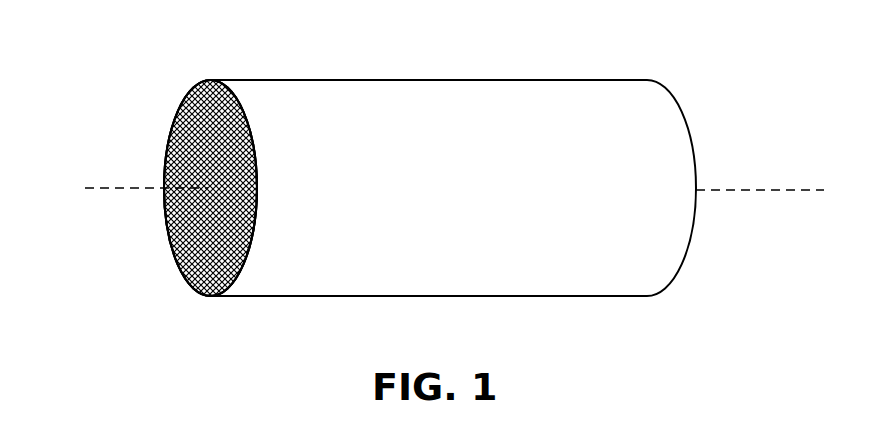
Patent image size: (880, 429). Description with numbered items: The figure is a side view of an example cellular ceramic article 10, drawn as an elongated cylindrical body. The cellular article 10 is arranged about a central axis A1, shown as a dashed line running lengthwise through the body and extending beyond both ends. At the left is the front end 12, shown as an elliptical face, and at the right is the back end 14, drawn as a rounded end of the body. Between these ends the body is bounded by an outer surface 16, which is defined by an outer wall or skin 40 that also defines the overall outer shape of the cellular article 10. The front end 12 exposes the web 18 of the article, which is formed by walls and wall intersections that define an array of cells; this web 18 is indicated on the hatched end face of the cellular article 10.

The cellular article 10 is at (178, 44).
The front end 12 is at (198, 283).
The back end 14 is at (686, 254).
The outer surface 16 is at (384, 104).
The web 18 is at (186, 138).
The outer wall or skin 40 is at (164, 155).
The central axis A1 is at (98, 189).